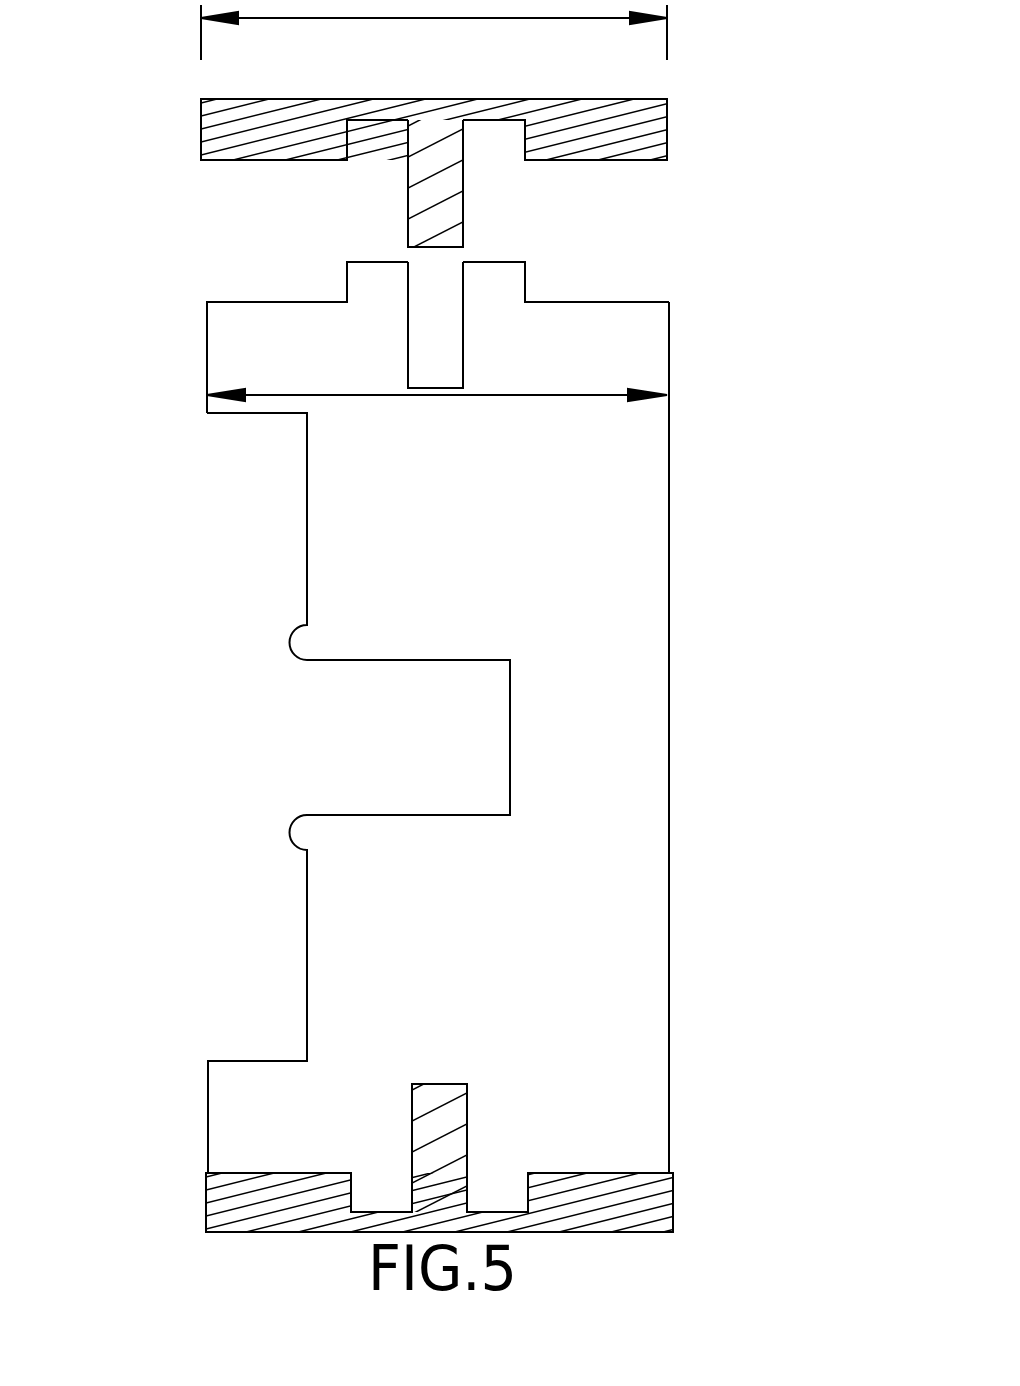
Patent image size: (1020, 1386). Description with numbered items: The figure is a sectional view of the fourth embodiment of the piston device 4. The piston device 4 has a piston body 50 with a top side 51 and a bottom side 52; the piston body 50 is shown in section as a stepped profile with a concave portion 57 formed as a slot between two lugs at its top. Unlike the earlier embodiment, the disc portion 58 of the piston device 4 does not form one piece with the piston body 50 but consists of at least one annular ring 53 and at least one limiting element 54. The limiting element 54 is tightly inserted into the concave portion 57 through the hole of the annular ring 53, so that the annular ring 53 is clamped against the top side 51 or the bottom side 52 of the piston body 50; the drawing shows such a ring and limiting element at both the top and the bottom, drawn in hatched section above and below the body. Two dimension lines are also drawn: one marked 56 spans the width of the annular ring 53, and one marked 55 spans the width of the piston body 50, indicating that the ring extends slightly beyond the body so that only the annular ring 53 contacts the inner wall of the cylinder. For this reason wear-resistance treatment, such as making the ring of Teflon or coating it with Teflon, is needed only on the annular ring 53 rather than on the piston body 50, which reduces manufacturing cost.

The piston device 4 is at (84, 1188).
The piston body 50 is at (450, 697).
The top side 51 is at (592, 300).
The bottom side 52 is at (627, 1168).
The annular ring 53 is at (668, 127).
The limiting element 54 is at (408, 180).
The width of body 55 is at (268, 395).
The width of top plate 56 is at (199, 34).
The concave portion 57 is at (463, 342).
The disc portion 58 is at (201, 134).